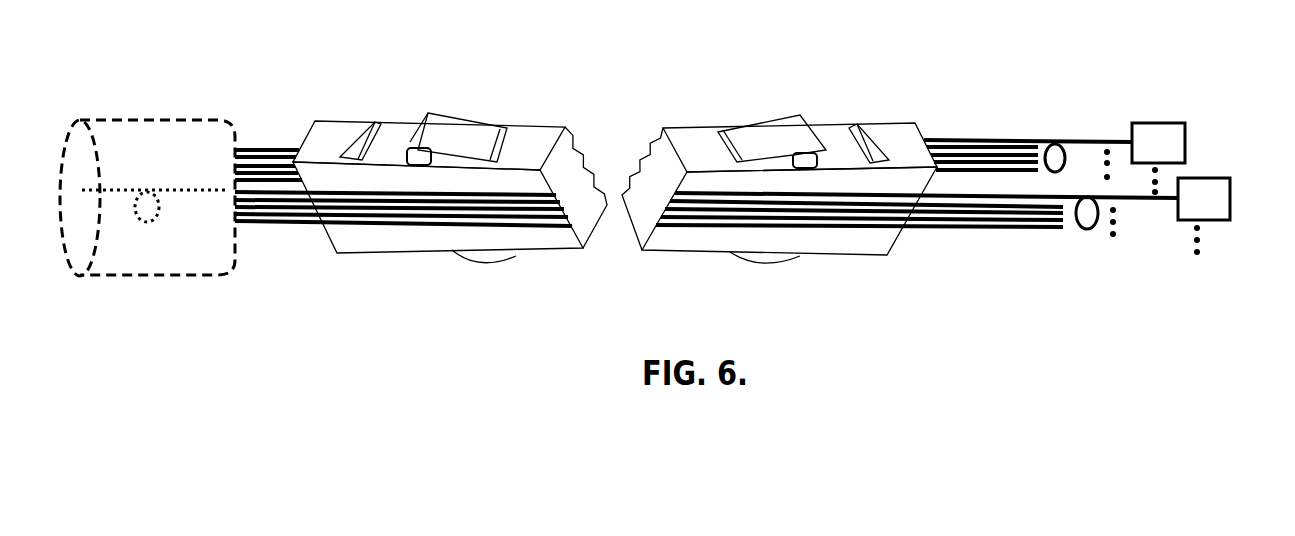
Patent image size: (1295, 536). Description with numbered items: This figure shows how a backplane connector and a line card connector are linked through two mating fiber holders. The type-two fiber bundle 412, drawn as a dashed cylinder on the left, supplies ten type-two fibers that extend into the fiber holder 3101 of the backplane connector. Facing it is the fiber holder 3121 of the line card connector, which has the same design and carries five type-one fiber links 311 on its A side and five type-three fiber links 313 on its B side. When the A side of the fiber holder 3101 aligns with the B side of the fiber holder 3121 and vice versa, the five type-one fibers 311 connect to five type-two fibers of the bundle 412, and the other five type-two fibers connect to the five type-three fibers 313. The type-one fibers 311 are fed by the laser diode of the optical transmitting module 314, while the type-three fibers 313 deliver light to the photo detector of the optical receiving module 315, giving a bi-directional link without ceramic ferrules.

The type-2 fiber bundle 412 is at (182, 117).
The fiber holder 3101 is at (487, 115).
The fiber holder 3121 is at (718, 119).
The type-3 fiber 313 is at (1075, 132).
The type-1 fiber 311 is at (1093, 230).
The optical receiving module 315 is at (1165, 121).
The optical transmitting module 314 is at (1217, 229).